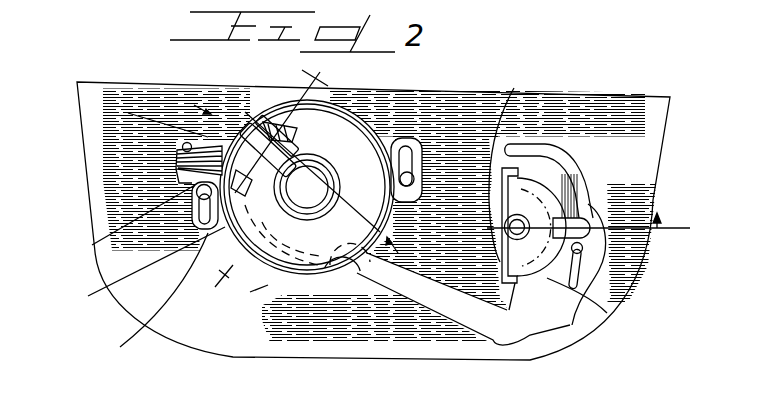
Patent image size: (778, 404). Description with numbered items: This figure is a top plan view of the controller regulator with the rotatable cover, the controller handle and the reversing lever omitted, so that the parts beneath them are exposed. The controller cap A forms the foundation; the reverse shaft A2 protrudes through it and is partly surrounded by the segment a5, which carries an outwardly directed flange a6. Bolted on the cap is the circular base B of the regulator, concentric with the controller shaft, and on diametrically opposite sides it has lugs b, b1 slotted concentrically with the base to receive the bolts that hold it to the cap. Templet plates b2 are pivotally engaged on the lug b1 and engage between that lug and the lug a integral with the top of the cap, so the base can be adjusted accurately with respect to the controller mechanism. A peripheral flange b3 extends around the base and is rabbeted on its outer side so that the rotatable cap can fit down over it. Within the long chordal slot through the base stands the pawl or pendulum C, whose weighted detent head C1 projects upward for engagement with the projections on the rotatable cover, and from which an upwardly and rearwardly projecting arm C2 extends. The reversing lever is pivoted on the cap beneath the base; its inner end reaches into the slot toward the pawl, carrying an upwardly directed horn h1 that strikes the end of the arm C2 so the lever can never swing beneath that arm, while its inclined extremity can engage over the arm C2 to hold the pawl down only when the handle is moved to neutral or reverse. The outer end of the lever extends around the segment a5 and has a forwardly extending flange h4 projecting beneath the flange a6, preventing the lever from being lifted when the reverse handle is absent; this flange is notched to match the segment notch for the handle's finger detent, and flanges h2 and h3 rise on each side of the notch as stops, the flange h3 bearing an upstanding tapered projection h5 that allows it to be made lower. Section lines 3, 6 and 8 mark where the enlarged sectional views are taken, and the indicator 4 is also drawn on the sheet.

The controller cap A is at (623, 110).
The reverse shaft A2 is at (518, 186).
The lug a is at (218, 132).
The segment a5 is at (528, 190).
The outwardly directed flange a6 is at (555, 260).
The base B is at (370, 127).
The lug b is at (394, 137).
The lug b1 is at (150, 295).
The templet plates b2 is at (178, 153).
The peripheral flange b3 is at (335, 145).
The pawl C is at (252, 128).
The pawl head C1 is at (156, 118).
The arm C2 is at (124, 225).
The horn h1 is at (168, 269).
The flange h2 is at (562, 190).
The flange h3 is at (585, 265).
The forwardly extending flange h4 is at (565, 196).
The tapered projection h5 is at (583, 256).
The section line 3— 3 is at (266, 182).
The sloped arm 4 is at (507, 325).
The section line 6— 6 is at (293, 181).
The section line 8— 8 is at (670, 229).